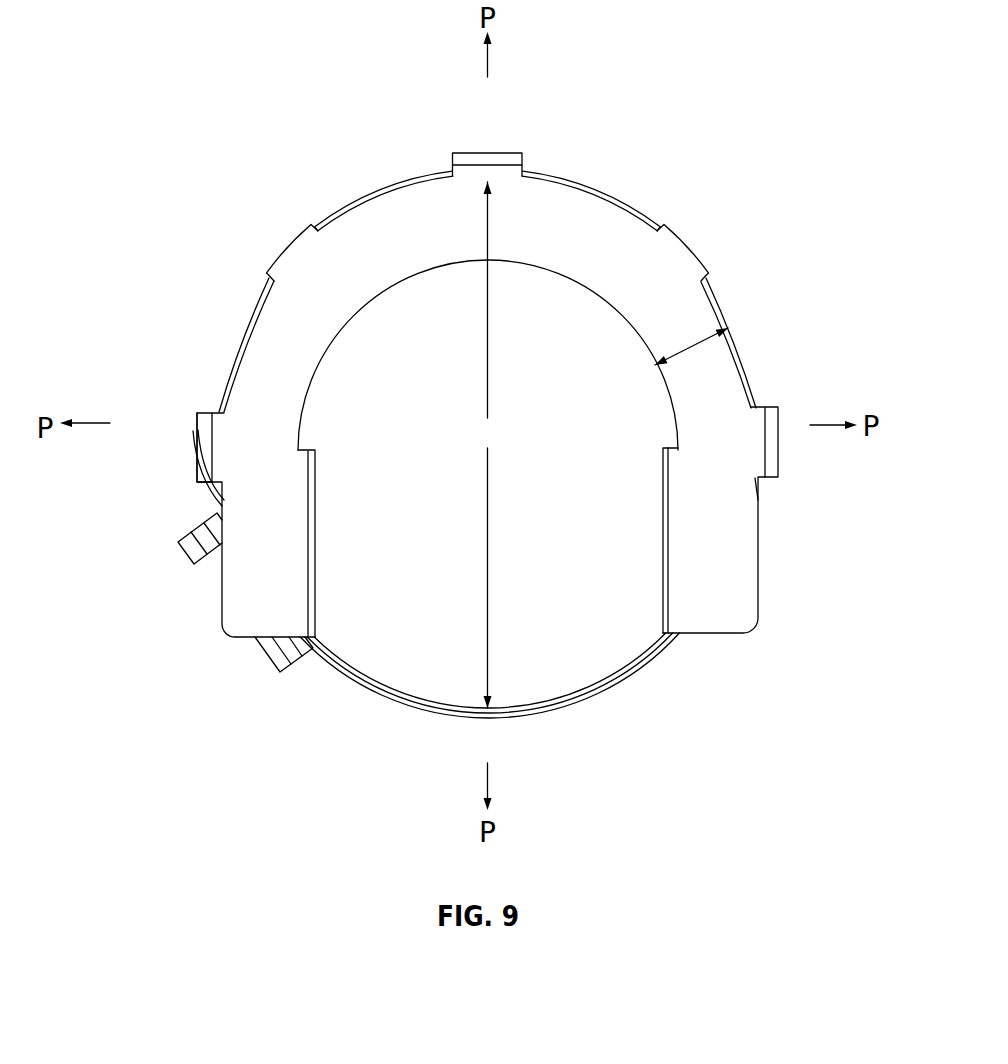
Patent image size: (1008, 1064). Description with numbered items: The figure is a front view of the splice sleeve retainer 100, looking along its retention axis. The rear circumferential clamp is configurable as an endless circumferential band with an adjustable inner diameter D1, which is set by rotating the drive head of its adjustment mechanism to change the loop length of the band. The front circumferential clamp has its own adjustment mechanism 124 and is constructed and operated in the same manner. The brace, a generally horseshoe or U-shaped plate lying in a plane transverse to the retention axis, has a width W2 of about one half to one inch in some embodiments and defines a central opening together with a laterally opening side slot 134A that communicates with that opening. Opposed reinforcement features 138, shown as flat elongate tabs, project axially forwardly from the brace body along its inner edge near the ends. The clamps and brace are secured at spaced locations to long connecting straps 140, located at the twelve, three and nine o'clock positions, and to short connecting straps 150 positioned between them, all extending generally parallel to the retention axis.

The splice sleeve retainer 100 is at (163, 82).
The adjustment mechanism 124 is at (215, 572).
The side slot 134A is at (539, 686).
The reinforcement features 138 is at (315, 497).
The long connecting straps 140 is at (487, 153).
The short connecting straps 150 is at (288, 251).
The inner diameter D1 is at (487, 445).
The width W2 is at (690, 343).